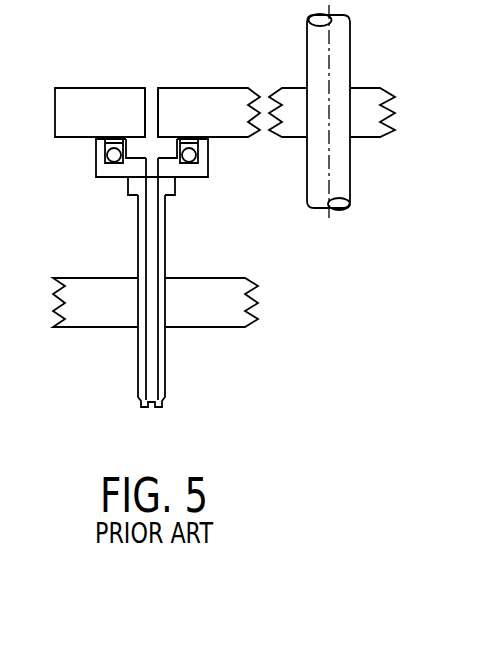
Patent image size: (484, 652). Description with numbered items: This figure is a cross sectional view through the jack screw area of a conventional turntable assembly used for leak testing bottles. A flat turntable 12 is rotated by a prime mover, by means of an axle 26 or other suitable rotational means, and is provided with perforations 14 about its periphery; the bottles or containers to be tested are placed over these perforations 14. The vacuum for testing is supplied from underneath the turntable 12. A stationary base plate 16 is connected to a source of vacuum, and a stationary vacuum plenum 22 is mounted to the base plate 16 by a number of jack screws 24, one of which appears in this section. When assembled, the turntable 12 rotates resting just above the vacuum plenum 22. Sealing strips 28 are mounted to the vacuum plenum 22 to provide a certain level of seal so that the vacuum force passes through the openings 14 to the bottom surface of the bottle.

The turntable 12 is at (100, 88).
The perforations 14 is at (150, 87).
The stationary base plate 16 is at (208, 318).
The stationary vacuum plenum 22 is at (192, 179).
The jack screws 24 is at (137, 250).
The axle 26 is at (351, 56).
The sealing strips 28 is at (102, 144).